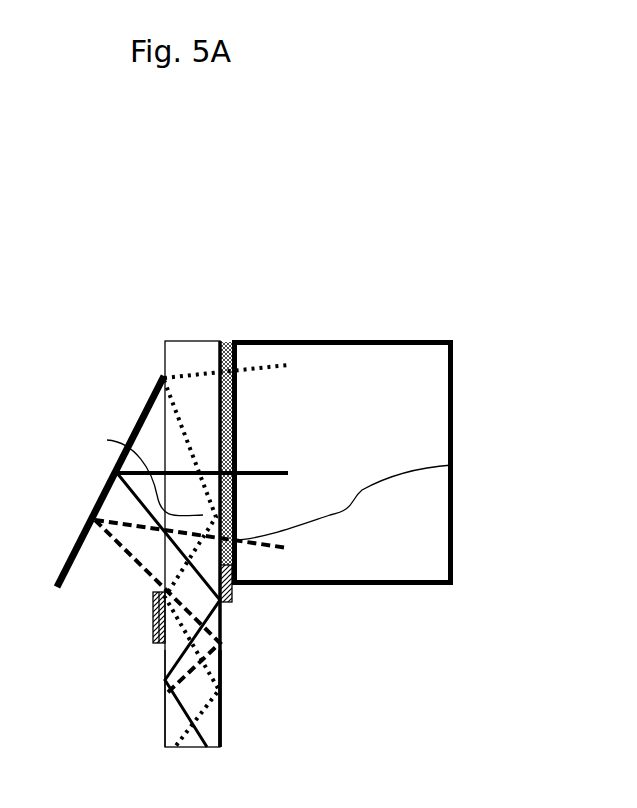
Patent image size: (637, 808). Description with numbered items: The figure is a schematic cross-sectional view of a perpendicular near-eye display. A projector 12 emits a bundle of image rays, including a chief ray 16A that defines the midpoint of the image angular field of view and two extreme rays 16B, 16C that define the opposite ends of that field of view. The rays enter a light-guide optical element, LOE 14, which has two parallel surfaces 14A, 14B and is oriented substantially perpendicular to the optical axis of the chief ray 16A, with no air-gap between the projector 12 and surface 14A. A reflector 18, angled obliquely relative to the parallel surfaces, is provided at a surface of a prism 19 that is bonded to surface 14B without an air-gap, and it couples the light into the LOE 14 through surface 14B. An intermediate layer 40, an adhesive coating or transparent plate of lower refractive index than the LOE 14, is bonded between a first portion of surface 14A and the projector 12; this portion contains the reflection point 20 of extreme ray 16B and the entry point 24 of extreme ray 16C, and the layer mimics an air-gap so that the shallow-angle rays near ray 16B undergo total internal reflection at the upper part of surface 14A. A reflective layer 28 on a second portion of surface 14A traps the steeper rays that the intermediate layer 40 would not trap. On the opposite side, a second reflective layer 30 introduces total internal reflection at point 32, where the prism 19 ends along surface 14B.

The projector 12 is at (342, 340).
The LOE 14 is at (193, 358).
The surface 14A is at (222, 727).
The surface 14B is at (163, 722).
The chief ray 16A is at (225, 604).
The extreme ray 16B is at (245, 552).
The extreme ray 16C is at (214, 607).
The reflector 18 is at (143, 403).
The prism 19 is at (153, 612).
The reflection point 20 is at (107, 441).
The entry point 24 is at (452, 465).
The reflective layer 28 is at (225, 602).
The second reflective layer 30 is at (158, 645).
The point 32 is at (153, 592).
The intermediate layer 40 is at (238, 362).